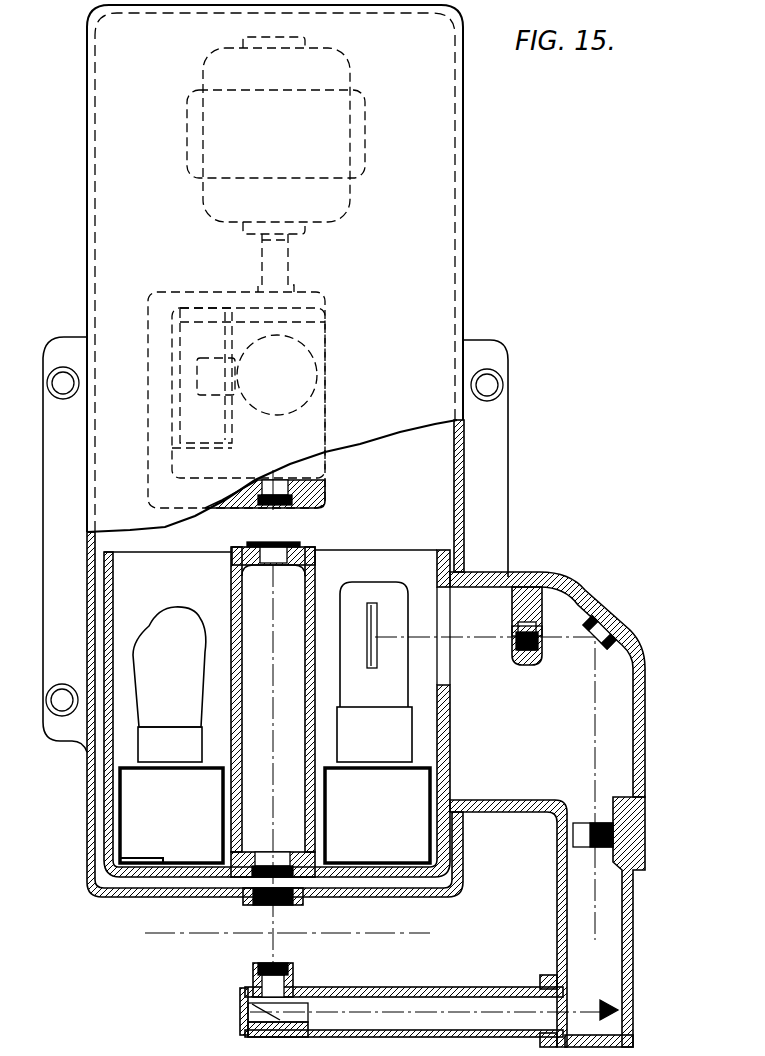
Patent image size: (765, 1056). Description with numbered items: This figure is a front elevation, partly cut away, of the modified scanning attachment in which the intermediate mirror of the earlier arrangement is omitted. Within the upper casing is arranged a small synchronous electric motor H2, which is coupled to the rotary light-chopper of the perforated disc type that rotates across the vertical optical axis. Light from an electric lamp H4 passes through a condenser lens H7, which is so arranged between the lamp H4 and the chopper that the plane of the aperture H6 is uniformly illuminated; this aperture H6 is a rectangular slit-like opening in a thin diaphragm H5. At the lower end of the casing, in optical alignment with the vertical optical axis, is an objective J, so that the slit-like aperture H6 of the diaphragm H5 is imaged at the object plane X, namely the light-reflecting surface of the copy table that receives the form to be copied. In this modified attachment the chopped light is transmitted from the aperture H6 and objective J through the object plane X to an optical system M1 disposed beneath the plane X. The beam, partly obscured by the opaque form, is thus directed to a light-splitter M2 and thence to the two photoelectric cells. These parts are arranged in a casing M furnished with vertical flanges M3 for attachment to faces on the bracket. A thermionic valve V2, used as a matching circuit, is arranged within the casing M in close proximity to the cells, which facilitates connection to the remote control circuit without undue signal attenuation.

The casing M is at (445, 276).
The optical system M1 is at (283, 966).
The light-splitter M2 is at (603, 628).
The vertical flanges M3 is at (46, 417).
The synchronous electric motor H2 is at (350, 212).
The electric lamp H4 is at (307, 381).
The diaphragm H5 is at (300, 546).
The aperture H6 is at (273, 545).
The condenser lens H7 is at (323, 482).
The thermionic valve V2 is at (185, 623).
The objective J is at (276, 852).
The object plane X is at (417, 933).